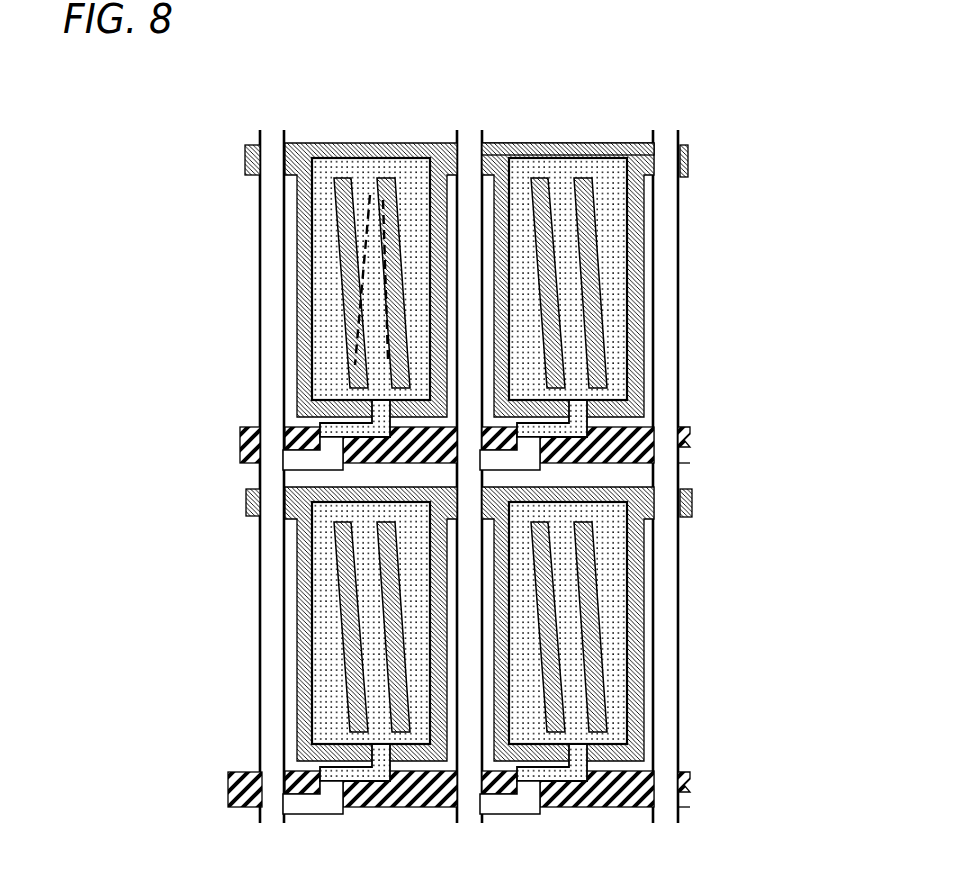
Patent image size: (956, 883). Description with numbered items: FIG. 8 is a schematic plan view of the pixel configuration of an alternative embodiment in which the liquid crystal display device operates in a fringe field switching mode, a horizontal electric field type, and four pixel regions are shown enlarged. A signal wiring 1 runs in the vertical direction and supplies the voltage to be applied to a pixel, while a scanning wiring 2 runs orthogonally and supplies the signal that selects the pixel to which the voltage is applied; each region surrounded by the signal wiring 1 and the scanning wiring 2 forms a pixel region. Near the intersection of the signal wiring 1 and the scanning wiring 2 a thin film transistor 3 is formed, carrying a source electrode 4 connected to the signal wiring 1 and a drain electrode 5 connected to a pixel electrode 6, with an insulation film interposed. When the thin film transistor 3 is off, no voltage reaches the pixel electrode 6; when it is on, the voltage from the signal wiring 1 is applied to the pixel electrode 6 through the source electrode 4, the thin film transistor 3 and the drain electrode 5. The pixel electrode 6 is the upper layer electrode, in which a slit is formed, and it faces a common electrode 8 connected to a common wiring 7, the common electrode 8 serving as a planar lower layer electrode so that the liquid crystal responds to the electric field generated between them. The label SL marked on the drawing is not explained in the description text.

The signal wiring 1 is at (267, 368).
The scanning wiring 2 is at (240, 430).
The thin film transistor 3 is at (655, 442).
The source electrode 4 is at (327, 463).
The drain electrode 5 is at (560, 420).
The pixel electrode 6 is at (567, 282).
The common wiring 7 is at (650, 508).
The common electrode 8 is at (640, 215).
The storage line SL is at (603, 143).